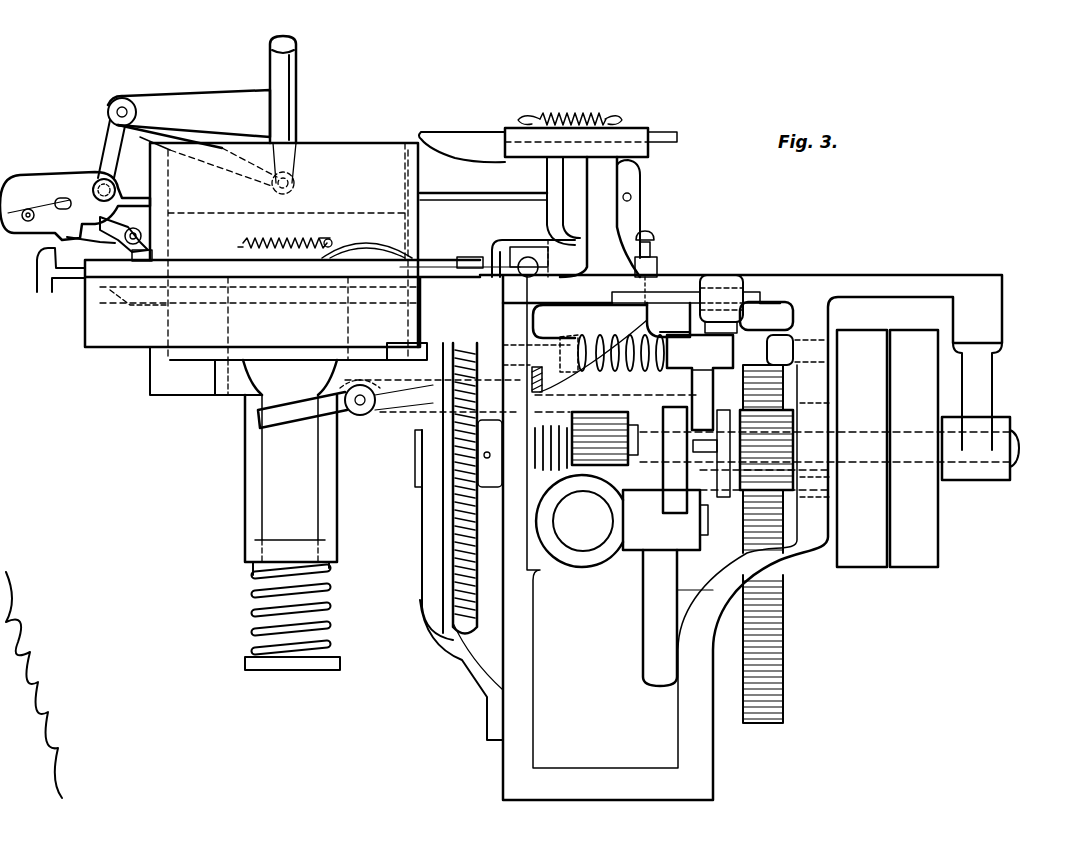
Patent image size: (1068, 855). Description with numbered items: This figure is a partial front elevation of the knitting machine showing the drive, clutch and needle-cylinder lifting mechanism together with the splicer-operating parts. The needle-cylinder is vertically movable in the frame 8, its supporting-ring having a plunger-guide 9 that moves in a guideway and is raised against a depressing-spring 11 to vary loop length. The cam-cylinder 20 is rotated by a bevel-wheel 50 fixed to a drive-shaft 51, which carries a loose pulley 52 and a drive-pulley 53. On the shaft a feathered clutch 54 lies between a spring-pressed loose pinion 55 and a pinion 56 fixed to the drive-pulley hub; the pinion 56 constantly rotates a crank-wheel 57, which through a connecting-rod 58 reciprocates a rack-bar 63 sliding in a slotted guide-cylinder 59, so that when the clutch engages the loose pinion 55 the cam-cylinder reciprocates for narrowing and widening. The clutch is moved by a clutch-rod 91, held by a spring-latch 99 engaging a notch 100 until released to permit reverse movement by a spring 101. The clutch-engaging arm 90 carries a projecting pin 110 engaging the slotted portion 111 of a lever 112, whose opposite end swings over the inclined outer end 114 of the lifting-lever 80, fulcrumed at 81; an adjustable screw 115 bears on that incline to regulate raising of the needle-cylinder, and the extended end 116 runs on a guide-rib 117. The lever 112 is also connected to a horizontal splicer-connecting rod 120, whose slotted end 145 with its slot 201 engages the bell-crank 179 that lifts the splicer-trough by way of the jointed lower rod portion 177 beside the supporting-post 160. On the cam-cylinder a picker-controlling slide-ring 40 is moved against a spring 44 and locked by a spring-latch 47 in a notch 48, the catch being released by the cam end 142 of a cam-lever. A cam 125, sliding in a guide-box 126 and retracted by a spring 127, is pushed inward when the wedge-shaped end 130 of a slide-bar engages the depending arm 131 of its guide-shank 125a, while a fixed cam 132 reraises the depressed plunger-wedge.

The frame 8 is at (282, 327).
The plunger-guide 9 is at (282, 461).
The depressing-spring 11 is at (329, 604).
The cam-cylinder 20 is at (288, 251).
The picker-controlling slide-ring 40 is at (433, 258).
The spring 44 is at (285, 232).
The spring-latch 47 is at (128, 238).
The notch 48 is at (150, 256).
The bevel-wheel 50 is at (477, 592).
The drive-shaft 51 is at (1020, 448).
The loose pulley 52 is at (912, 448).
The drive-pulley 53 is at (862, 448).
The feathered clutch 54 is at (665, 414).
The spring-pressed loose pinion 55 is at (588, 416).
The pinion 56 is at (781, 450).
The crank-wheel 57 is at (784, 622).
The connecting-rod 58 is at (660, 618).
The guide-cylinder 59 is at (593, 558).
The rack-bar 63 is at (579, 521).
The lifting-lever 80 is at (392, 412).
The fulcrum 81 is at (360, 414).
The clutch-engaging arm 90 is at (692, 384).
The clutch-rod 91 is at (620, 371).
The spring-latch 99 is at (542, 392).
The notch 100 is at (572, 372).
The spring 101 is at (575, 345).
The projecting pin 110 is at (700, 382).
The grooved or slotted portion 111 is at (738, 328).
The lever 112 is at (760, 318).
The outer end of lifting-lever 114 is at (600, 345).
The adjustable screw 115 is at (652, 250).
The extended end 116 is at (718, 280).
The guide-rib 117 is at (670, 294).
The splicer-connecting rod 120 is at (476, 196).
The cam 125 is at (455, 140).
The guide-shank 125a is at (668, 134).
The guide-box 126 is at (643, 160).
The spring 127 is at (578, 116).
The wedge-shaped end 130 is at (529, 256).
The depending arm 131 is at (572, 201).
The cam or projection 132 is at (368, 254).
The cam end 142 is at (50, 282).
The slotted end 145 is at (75, 206).
The supporting-post 160 is at (297, 45).
The lower portion of rod 177 is at (296, 100).
The bell-crank 179 is at (118, 130).
The slot 201 is at (68, 198).